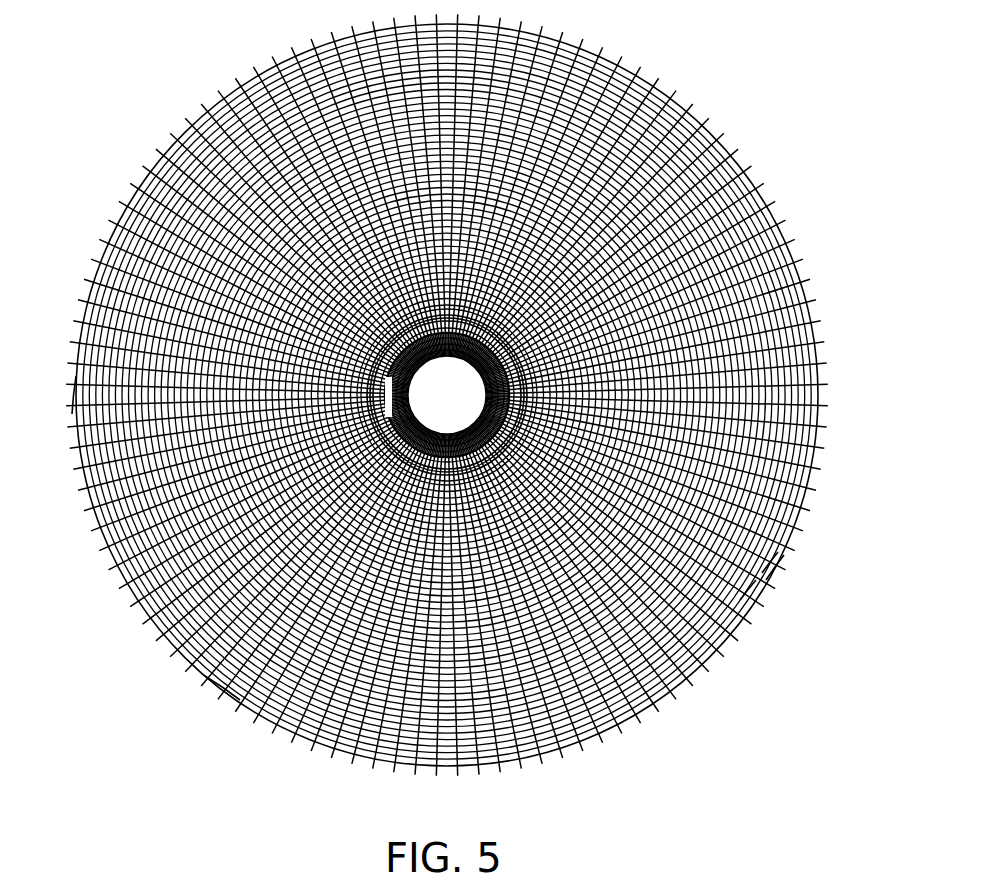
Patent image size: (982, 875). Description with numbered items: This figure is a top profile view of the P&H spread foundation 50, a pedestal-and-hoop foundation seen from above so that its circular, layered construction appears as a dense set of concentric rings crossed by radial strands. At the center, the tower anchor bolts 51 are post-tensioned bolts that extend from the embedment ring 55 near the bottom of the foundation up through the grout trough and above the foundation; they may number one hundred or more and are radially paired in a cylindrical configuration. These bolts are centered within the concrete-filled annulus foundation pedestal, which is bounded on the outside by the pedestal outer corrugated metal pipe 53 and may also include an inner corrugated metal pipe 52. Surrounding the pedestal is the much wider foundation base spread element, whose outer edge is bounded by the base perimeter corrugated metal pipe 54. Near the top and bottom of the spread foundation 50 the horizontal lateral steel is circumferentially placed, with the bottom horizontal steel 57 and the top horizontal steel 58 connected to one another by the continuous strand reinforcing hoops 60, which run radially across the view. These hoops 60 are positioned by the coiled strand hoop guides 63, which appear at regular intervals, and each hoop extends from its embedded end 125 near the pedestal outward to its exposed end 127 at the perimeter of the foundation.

The P&H spread foundation 50 is at (445, 403).
The tower anchor bolts 51 is at (400, 398).
The inner corrugated metal pipe 52 is at (490, 377).
The pedestal outer corrugated metal pipe 53 is at (481, 402).
The embedment ring 55 is at (414, 373).
The embedded end 125 is at (417, 424).
The base perimeter corrugated metal pipe 54 is at (808, 284).
The coiled strand hoop guides 63 is at (820, 398).
The continuous strand reinforcing hoops 60 is at (750, 590).
The bottom horizontal (lateral) steel 57 is at (772, 569).
The top horizontal (lateral) steel 58 is at (772, 569).
The exposed end 127 is at (70, 402).